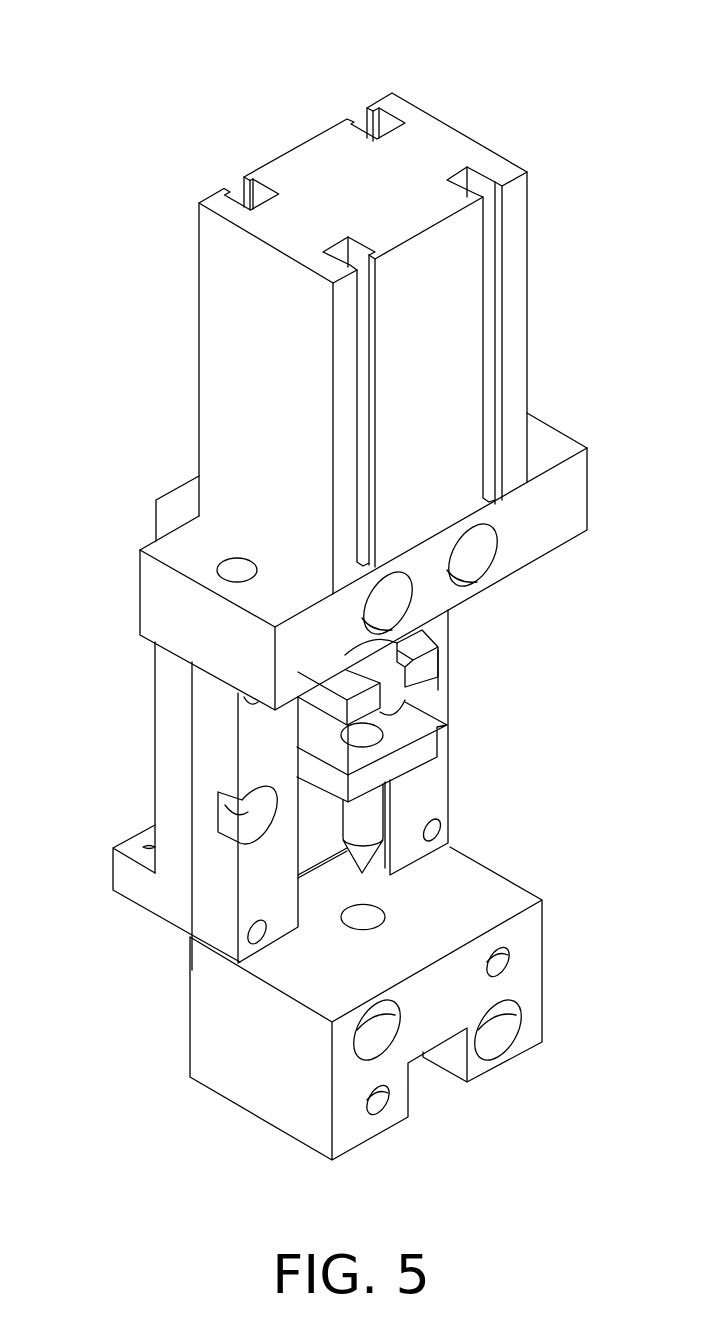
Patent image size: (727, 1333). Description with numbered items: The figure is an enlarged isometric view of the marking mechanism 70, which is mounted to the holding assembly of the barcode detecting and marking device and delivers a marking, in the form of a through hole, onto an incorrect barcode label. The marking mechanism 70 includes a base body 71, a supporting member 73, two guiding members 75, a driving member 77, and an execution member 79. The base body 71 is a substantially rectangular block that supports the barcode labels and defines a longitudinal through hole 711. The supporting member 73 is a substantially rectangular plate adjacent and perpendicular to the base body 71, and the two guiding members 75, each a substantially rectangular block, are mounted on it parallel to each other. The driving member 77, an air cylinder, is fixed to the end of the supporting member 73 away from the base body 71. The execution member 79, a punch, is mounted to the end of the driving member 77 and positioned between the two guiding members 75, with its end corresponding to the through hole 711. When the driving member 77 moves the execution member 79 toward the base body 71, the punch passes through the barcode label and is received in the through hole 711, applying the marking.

The marking mechanism 70 is at (318, 31).
The base body 71 is at (457, 872).
The through hole 711 is at (362, 920).
The supporting member 73 is at (170, 695).
The guiding members 75 is at (215, 747).
The driving member 77 is at (163, 603).
The execution member 79 is at (368, 807).